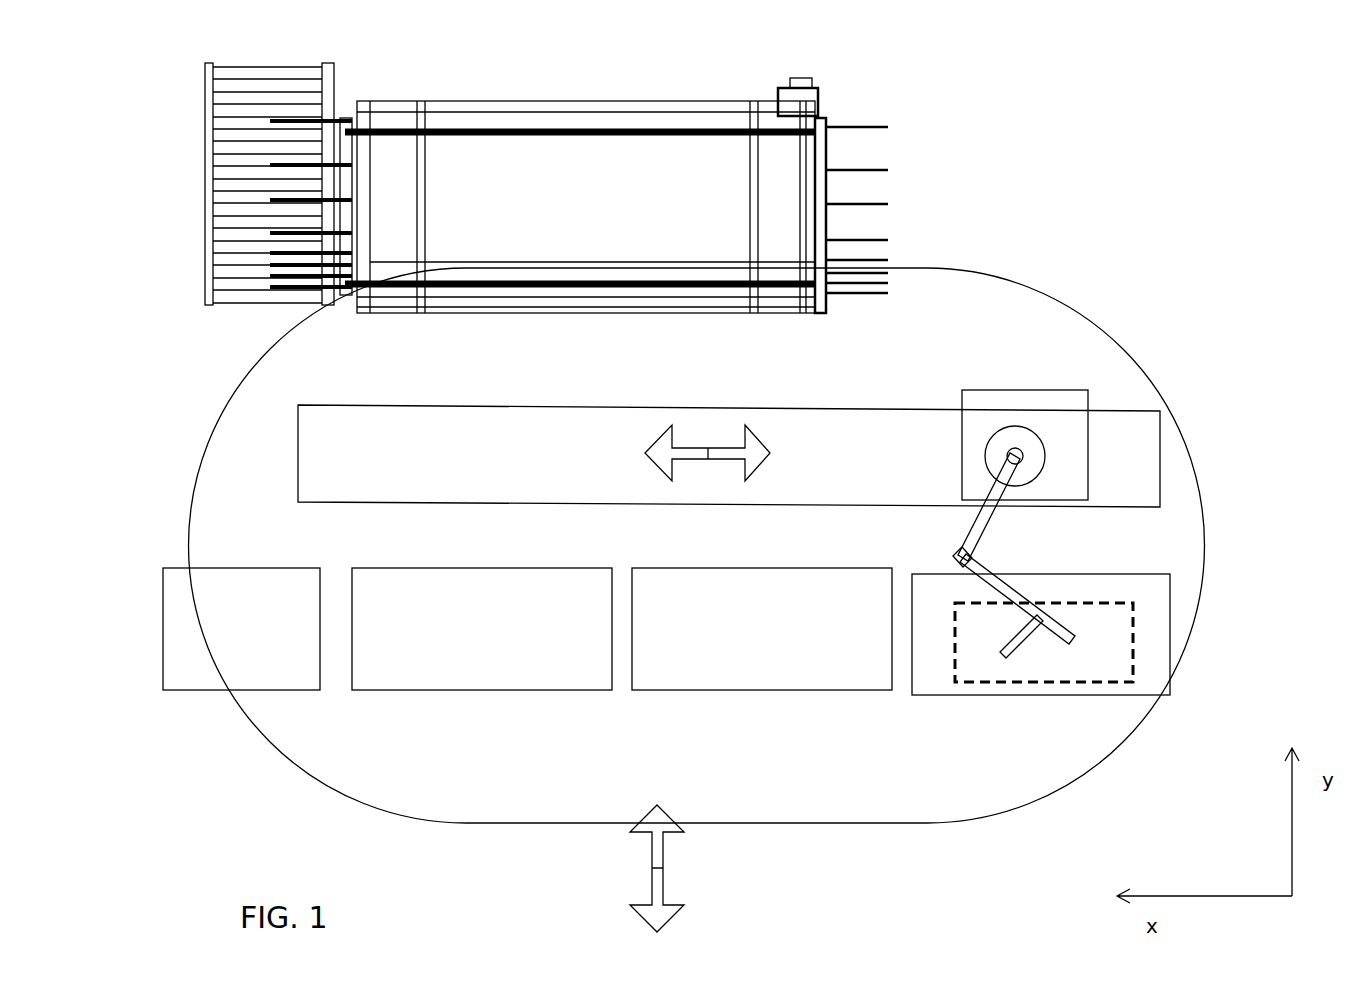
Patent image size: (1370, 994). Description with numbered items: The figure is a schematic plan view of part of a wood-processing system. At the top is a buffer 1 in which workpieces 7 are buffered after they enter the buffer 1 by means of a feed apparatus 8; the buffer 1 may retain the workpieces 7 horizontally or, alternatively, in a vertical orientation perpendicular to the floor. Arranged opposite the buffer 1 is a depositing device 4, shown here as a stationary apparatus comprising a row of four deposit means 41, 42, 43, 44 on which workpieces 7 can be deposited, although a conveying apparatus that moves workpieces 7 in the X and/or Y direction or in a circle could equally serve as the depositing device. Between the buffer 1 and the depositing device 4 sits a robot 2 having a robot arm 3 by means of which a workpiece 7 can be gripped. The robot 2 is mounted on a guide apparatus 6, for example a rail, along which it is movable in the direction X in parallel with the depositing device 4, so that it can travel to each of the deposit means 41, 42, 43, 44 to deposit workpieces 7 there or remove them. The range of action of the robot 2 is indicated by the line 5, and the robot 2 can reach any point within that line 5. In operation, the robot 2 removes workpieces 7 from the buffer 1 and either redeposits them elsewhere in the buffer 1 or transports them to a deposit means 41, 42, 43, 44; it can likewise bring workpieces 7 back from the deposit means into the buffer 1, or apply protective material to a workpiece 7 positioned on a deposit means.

The buffer 1 is at (825, 205).
The robot 2 is at (1082, 407).
The robot arm 3 is at (1002, 655).
The depositing device 4 is at (763, 469).
The line 5 is at (1057, 312).
The guide apparatus 6 is at (372, 428).
The workpiece 7 is at (1103, 645).
The feed apparatus 8 is at (312, 100).
The deposit means 41 is at (920, 692).
The deposit means 42 is at (680, 672).
The deposit means 43 is at (442, 663).
The deposit means 44 is at (185, 672).